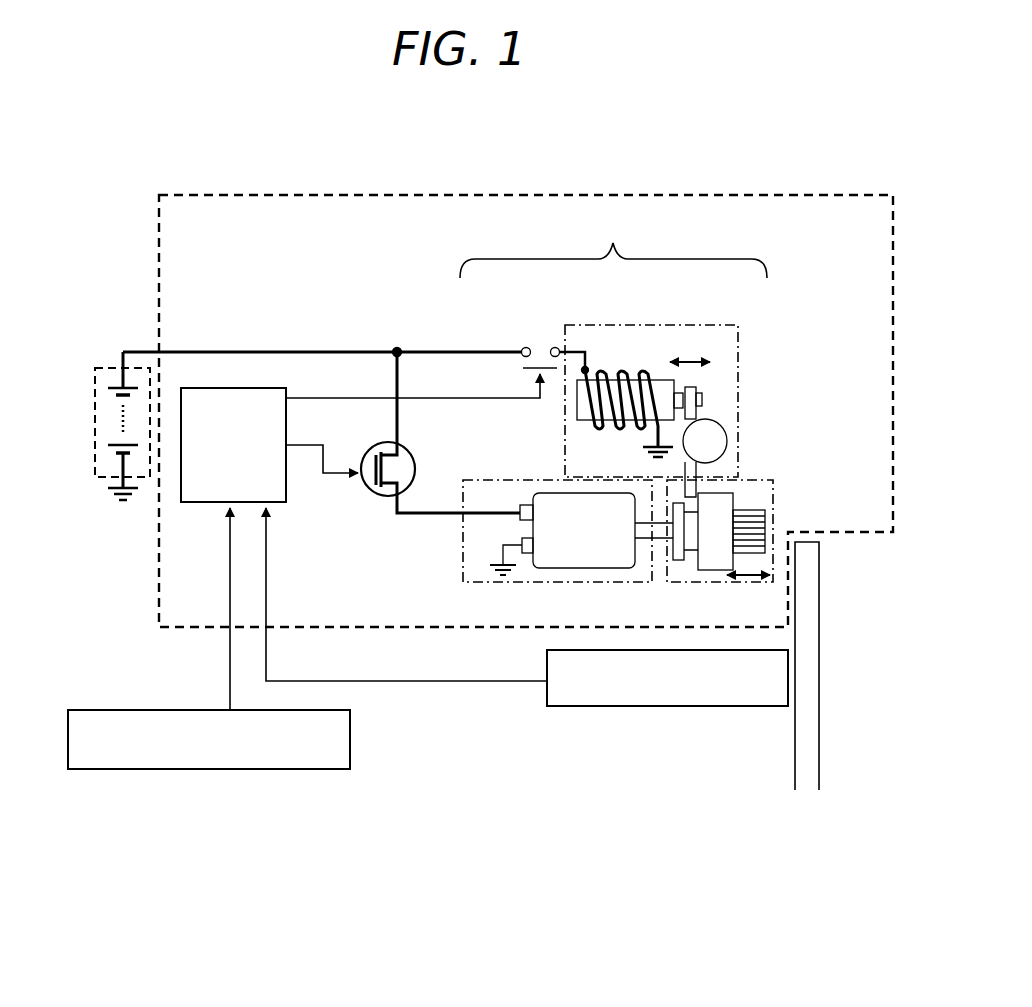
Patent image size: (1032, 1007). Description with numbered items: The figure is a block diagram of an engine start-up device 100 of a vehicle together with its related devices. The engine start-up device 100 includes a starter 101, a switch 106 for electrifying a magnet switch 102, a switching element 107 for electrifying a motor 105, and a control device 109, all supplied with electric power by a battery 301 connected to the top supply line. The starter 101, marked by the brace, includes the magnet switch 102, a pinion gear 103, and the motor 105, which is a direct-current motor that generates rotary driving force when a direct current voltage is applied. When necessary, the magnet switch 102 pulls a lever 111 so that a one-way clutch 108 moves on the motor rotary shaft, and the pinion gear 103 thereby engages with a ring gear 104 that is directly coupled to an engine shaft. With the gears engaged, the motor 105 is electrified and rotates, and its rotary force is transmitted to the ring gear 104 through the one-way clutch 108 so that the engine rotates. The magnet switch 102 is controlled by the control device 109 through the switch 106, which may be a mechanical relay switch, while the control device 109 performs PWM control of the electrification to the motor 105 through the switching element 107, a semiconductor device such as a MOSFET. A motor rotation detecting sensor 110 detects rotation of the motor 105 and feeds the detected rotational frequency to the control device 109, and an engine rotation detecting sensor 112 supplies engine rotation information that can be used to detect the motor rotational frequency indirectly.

The engine start-up device 100 is at (159, 222).
The starter 101 is at (613, 245).
The magnet switch 102 is at (738, 330).
The pinion gear 103 is at (775, 518).
The ring gear 104 is at (819, 572).
The motor 105 is at (463, 540).
The switch 106 is at (540, 345).
The switching element 107 is at (348, 500).
The one-way clutch 108 is at (722, 500).
The control device 109 is at (177, 503).
The motor rotation detecting sensor 110 is at (570, 706).
The lever 111 is at (727, 432).
The engine rotation detecting sensor 112 is at (253, 769).
The battery 301 is at (113, 370).